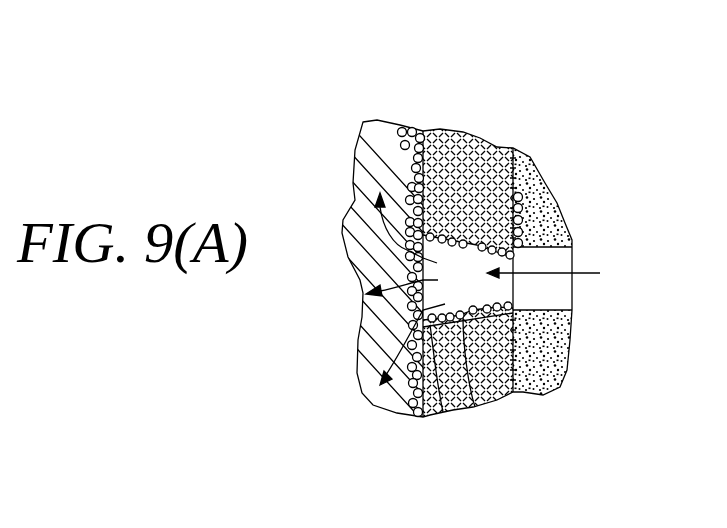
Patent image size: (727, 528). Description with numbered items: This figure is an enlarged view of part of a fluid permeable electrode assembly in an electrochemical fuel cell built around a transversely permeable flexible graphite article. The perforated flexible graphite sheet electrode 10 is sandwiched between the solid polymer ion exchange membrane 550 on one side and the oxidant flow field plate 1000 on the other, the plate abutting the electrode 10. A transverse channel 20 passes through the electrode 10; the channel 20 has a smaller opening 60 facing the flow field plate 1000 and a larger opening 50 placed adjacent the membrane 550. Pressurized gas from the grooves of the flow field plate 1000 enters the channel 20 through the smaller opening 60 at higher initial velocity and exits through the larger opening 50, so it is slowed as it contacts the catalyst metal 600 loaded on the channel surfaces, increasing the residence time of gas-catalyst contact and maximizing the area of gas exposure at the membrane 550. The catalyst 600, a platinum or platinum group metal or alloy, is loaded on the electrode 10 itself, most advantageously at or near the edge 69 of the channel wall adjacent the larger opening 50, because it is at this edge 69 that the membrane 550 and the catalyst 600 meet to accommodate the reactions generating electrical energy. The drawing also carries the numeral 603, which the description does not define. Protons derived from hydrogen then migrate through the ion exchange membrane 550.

The perforated flexible graphite sheet electrode 10 is at (513, 150).
The channel 20 is at (465, 408).
The larger opening 50 is at (425, 240).
The smaller opening 60 is at (513, 291).
The edge 69 is at (450, 414).
The ion exchange membrane 550 is at (375, 121).
The catalyst metal 600 is at (520, 240).
The bubble layer 603 is at (416, 128).
The oxidant flow field plate 1000 is at (537, 197).